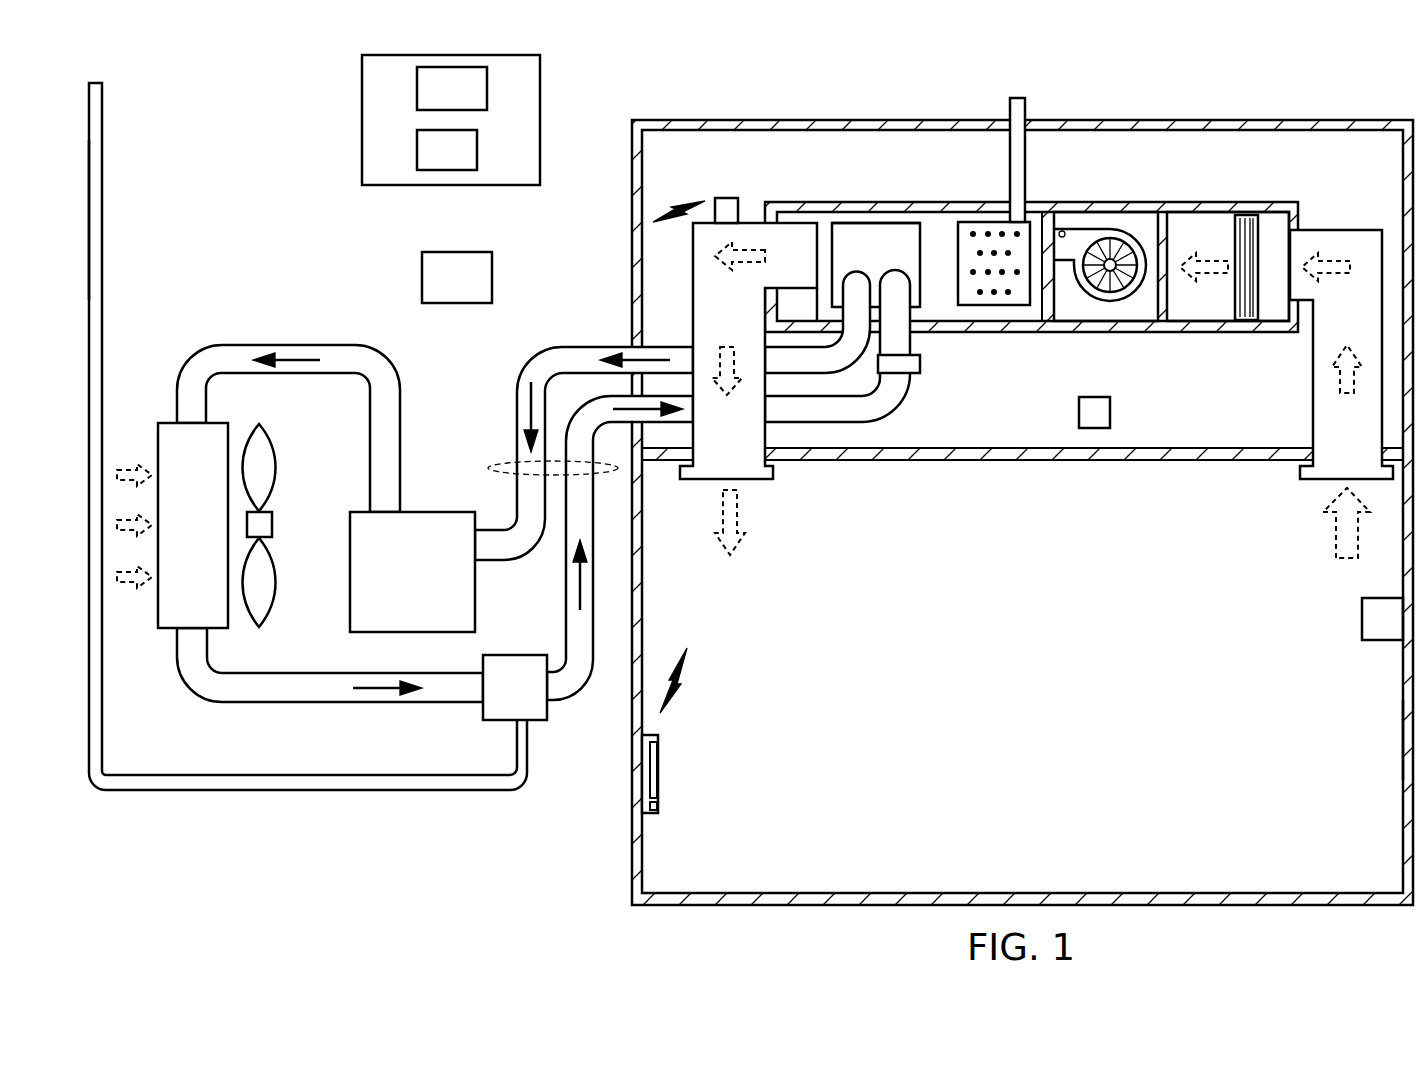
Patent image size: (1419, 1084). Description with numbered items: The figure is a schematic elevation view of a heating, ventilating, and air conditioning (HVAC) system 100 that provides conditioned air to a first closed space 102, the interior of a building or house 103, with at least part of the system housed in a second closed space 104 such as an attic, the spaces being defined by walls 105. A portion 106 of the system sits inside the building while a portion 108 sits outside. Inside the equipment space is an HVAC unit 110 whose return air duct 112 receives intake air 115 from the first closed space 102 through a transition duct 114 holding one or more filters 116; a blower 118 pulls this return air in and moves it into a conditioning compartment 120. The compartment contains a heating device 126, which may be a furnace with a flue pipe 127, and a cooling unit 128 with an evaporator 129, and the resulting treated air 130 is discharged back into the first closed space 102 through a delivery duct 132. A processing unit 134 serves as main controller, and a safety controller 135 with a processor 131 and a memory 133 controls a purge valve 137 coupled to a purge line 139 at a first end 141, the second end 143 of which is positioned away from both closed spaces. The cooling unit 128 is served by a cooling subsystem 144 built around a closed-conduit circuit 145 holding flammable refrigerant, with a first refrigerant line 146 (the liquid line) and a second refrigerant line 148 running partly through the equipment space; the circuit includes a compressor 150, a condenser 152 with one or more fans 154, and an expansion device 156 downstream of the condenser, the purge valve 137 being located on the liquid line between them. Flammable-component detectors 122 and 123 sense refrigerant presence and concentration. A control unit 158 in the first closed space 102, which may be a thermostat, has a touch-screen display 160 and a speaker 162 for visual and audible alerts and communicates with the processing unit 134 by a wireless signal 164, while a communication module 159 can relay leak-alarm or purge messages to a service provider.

The HVAC system 100 is at (1217, 339).
The first closed space 102 is at (1019, 683).
The building or house 103 is at (1357, 121).
The second closed space 104 is at (648, 268).
The walls 105 is at (1403, 738).
The portion of the system located within the building 106 is at (1124, 339).
The portion of the system outside the building 108 is at (209, 275).
The HVAC unit 110 is at (1006, 339).
The return air duct 112 is at (1336, 230).
The transition duct 114 is at (1205, 215).
The intake air 115 is at (1330, 542).
The filters 116 is at (1248, 222).
The blower 118 is at (1140, 215).
The conditioning compartment 120 is at (975, 332).
The flammable-component detector 122 is at (1110, 410).
The flammable-component detector 123 is at (1362, 620).
The heating device 126 is at (988, 222).
The flue pipe 127 is at (1017, 97).
The cooling unit 128 is at (852, 222).
The evaporator 129 is at (892, 222).
The treated air 130 is at (745, 557).
The processor 131 is at (417, 88).
The delivery duct 132 is at (768, 482).
The memory 133 is at (417, 150).
The processing unit 134 is at (725, 198).
The safety controller 135 is at (543, 74).
The purge valve 137 is at (483, 712).
The purge line 139 is at (104, 172).
The first end of the purge line 141 is at (527, 738).
The second end of the purge line 143 is at (104, 90).
The cooling subsystem 144 is at (188, 353).
The closed-conduit circuit 145 is at (290, 345).
The first refrigerant line 146 is at (566, 618).
The second refrigerant line 148 is at (517, 400).
The compressor 150 is at (431, 587).
The condenser 152 is at (212, 540).
The fans 154 is at (276, 470).
The expansion device 156 is at (921, 373).
The control unit 158 is at (658, 737).
The communication module 159 is at (422, 275).
The touch-screen display 160 is at (660, 768).
The speaker 162 is at (660, 810).
The wireless signal 164 is at (698, 203).